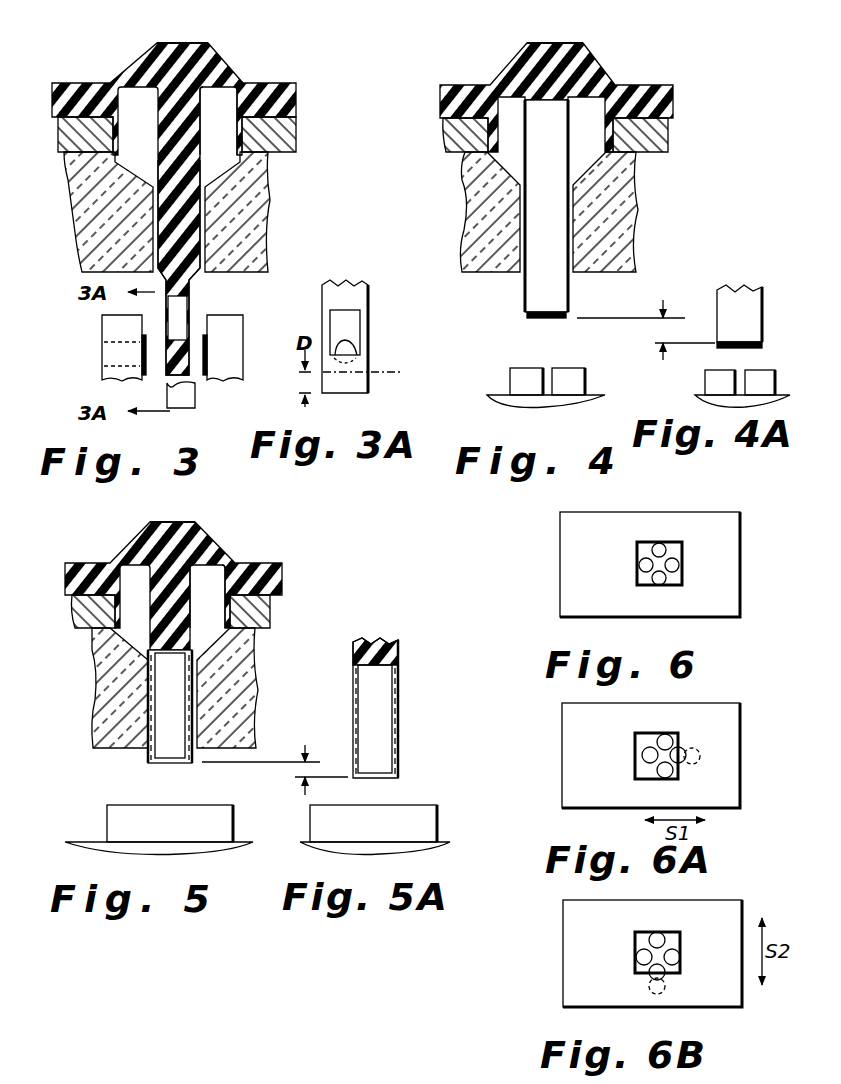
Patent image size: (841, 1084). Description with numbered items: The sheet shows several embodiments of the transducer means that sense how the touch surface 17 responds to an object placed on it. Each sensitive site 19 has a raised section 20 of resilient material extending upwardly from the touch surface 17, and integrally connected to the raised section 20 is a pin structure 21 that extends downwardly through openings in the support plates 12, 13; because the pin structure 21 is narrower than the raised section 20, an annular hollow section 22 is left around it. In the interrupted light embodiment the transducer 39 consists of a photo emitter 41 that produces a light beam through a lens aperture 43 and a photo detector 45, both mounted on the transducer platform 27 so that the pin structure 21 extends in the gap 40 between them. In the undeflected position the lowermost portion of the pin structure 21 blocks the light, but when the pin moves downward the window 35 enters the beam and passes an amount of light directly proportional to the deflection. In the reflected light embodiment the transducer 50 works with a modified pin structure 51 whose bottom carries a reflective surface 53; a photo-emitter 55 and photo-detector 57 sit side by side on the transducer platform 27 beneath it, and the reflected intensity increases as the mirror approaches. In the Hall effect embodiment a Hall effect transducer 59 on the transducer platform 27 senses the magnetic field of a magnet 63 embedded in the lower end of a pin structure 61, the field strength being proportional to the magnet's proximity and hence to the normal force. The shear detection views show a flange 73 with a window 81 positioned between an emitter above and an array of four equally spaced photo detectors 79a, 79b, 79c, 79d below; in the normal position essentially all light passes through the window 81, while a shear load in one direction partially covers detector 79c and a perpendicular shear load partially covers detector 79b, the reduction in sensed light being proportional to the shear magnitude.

In FIG. 3, the top plate 12 is at (68, 132).
In FIG. 4, the top plate 12 is at (655, 135).
In FIG. 5, the top plate 12 is at (262, 608).
In FIG. 3, the support plate 13 is at (85, 190).
In FIG. 4, the support plate 13 is at (625, 228).
In FIG. 3, the touch surface 17 is at (201, 192).
In FIG. 4, the touch surface 17 is at (580, 182).
In FIG. 5, the touch surface 17 is at (192, 628).
In FIG. 3, the sensitive site 19 is at (220, 40).
In FIG. 4, the sensitive site 19 is at (598, 42).
In FIG. 5, the sensitive site 19 is at (213, 521).
In FIG. 3, the raised section 20 is at (170, 43).
In FIG. 4, the raised section 20 is at (565, 43).
In FIG. 5, the raised section 20 is at (193, 522).
In FIG. 3, the pin structure 21 is at (207, 170).
In FIG. 3A, the pin structure 21 is at (368, 286).
In FIG. 3, the annular hollow section 22 is at (218, 106).
In FIG. 5, the annular hollow section 22 is at (212, 592).
In FIG. 4, the transducer platform 27 is at (520, 407).
In FIG. 4A, the transducer platform 27 is at (722, 408).
In FIG. 5, the transducer platform 27 is at (85, 853).
In FIG. 5A, the transducer platform 27 is at (322, 853).
In FIG. 3, the window 35 is at (189, 300).
In FIG. 3A, the window 35 is at (352, 320).
In FIG. 3, the transducer 39 is at (158, 358).
In FIG. 3, the gap 40 is at (178, 409).
In FIG. 3, the photo emitter 41 is at (102, 318).
In FIG. 3, the lens aperture 43 is at (118, 355).
In FIG. 3A, the lens aperture 43 is at (370, 373).
In FIG. 3, the photo detector 45 is at (244, 316).
In FIG. 4, the transducer 50 is at (484, 333).
In FIG. 4A, the transducer 50 is at (682, 365).
In FIG. 4, the modified pin structure 51 is at (552, 200).
In FIG. 4A, the modified pin structure 51 is at (748, 298).
In FIG. 4, the reflective surface 53 is at (540, 322).
In FIG. 4A, the reflective surface 53 is at (765, 346).
In FIG. 4, the photo-emitter 55 is at (527, 370).
In FIG. 4A, the photo-emitter 55 is at (704, 372).
In FIG. 4, the photo-detector 57 is at (575, 370).
In FIG. 4A, the photo-detector 57 is at (765, 381).
In FIG. 5, the Hall effect transducer 59 is at (107, 815).
In FIG. 5A, the Hall effect transducer 59 is at (405, 812).
In FIG. 5, the pin structure 61 is at (118, 637).
In FIG. 5A, the pin structure 61 is at (398, 652).
In FIG. 5, the magnet 63 is at (165, 692).
In FIG. 5A, the magnet 63 is at (378, 720).
In FIG. 6, the flange 73 is at (560, 538).
In FIG. 6A, the flange 73 is at (568, 755).
In FIG. 6B, the flange 73 is at (565, 930).
In FIG. 6, the photo detector 79a is at (640, 565).
In FIG. 6A, the photo detector 79a is at (652, 757).
In FIG. 6B, the photo detector 79a is at (636, 957).
In FIG. 6, the photo detector 79b is at (660, 585).
In FIG. 6A, the photo detector 79b is at (668, 780).
In FIG. 6B, the photo detector 79b is at (641, 984).
In FIG. 6, the photo detector 79c is at (682, 565).
In FIG. 6A, the photo detector 79c is at (703, 771).
In FIG. 6B, the photo detector 79c is at (682, 957).
In FIG. 6, the photo detector 79d is at (659, 543).
In FIG. 6A, the photo detector 79d is at (668, 736).
In FIG. 6B, the photo detector 79d is at (657, 935).
In FIG. 6, the window 81 is at (684, 545).
In FIG. 6A, the window 81 is at (635, 738).
In FIG. 6B, the window 81 is at (682, 940).